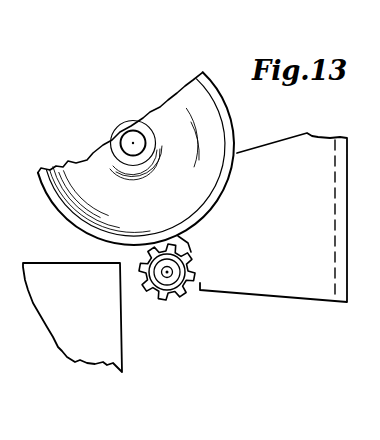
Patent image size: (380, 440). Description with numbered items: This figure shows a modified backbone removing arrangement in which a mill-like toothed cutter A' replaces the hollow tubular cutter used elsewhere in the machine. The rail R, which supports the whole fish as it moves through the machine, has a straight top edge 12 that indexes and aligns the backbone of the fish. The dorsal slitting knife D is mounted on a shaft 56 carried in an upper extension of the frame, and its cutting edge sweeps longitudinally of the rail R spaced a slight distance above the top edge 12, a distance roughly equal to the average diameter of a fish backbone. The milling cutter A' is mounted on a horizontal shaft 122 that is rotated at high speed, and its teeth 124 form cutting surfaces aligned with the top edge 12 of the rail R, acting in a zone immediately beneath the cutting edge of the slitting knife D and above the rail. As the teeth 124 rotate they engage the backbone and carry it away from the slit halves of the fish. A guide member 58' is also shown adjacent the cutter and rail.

The top edge 12 is at (66, 262).
The shaft 56 is at (130, 140).
The guide block 58' is at (262, 202).
The horizontal shaft 122 is at (178, 272).
The teeth 124 is at (153, 298).
The dorsal slitting knife D is at (202, 115).
The mill-like toothed cutter A' is at (190, 315).
The rail R is at (65, 328).